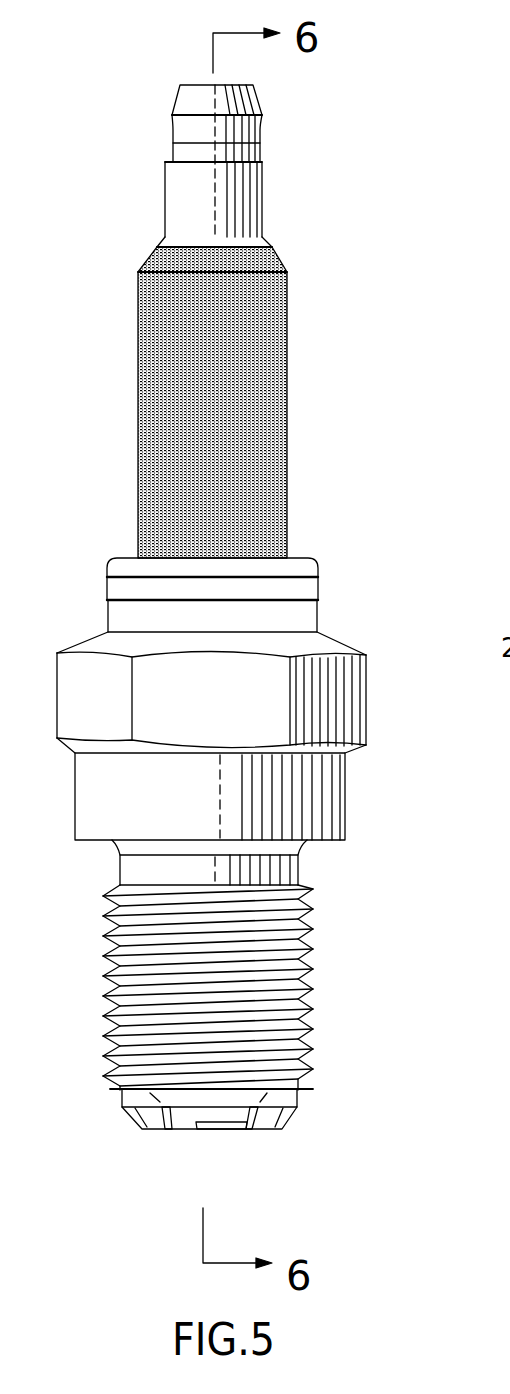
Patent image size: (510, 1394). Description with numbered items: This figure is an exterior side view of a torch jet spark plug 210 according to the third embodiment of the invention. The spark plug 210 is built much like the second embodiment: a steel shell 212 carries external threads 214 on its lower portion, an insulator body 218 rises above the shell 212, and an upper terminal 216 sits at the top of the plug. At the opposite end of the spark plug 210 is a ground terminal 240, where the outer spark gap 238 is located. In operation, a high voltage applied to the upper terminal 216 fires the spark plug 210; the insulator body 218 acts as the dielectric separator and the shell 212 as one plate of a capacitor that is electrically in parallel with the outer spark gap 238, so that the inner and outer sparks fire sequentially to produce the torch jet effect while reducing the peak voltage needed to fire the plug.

The spark plug 210 is at (332, 347).
The upper terminal 216 is at (248, 183).
The insulator body 218 is at (158, 422).
The steel shell 212 is at (335, 650).
The external threads 214 is at (303, 970).
The ground terminal 240 is at (138, 1127).
The outer spark gap 238 is at (247, 1130).